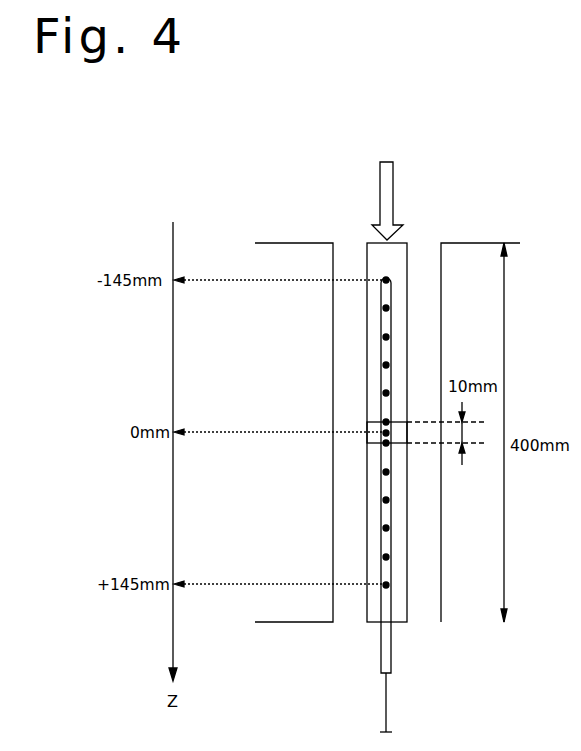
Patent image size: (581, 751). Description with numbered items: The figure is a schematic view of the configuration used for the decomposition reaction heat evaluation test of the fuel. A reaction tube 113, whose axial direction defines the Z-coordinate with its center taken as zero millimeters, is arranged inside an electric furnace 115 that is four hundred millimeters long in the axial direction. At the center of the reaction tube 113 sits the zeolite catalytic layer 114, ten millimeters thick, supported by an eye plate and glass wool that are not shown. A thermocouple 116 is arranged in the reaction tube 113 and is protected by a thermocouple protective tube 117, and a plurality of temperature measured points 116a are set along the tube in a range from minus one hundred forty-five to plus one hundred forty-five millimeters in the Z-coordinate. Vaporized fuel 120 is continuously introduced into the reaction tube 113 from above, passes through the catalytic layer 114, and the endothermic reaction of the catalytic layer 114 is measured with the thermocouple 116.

The reaction tube 113 is at (366, 250).
The H-ZSM-5 catalytic layer 114 is at (384, 421).
The electric furnace 115 is at (472, 243).
The thermocouple 116 is at (389, 698).
The temperature measured points 116a is at (384, 308).
The thermocouple protective tube 117 is at (392, 645).
The vaporized fuel 120 is at (395, 178).